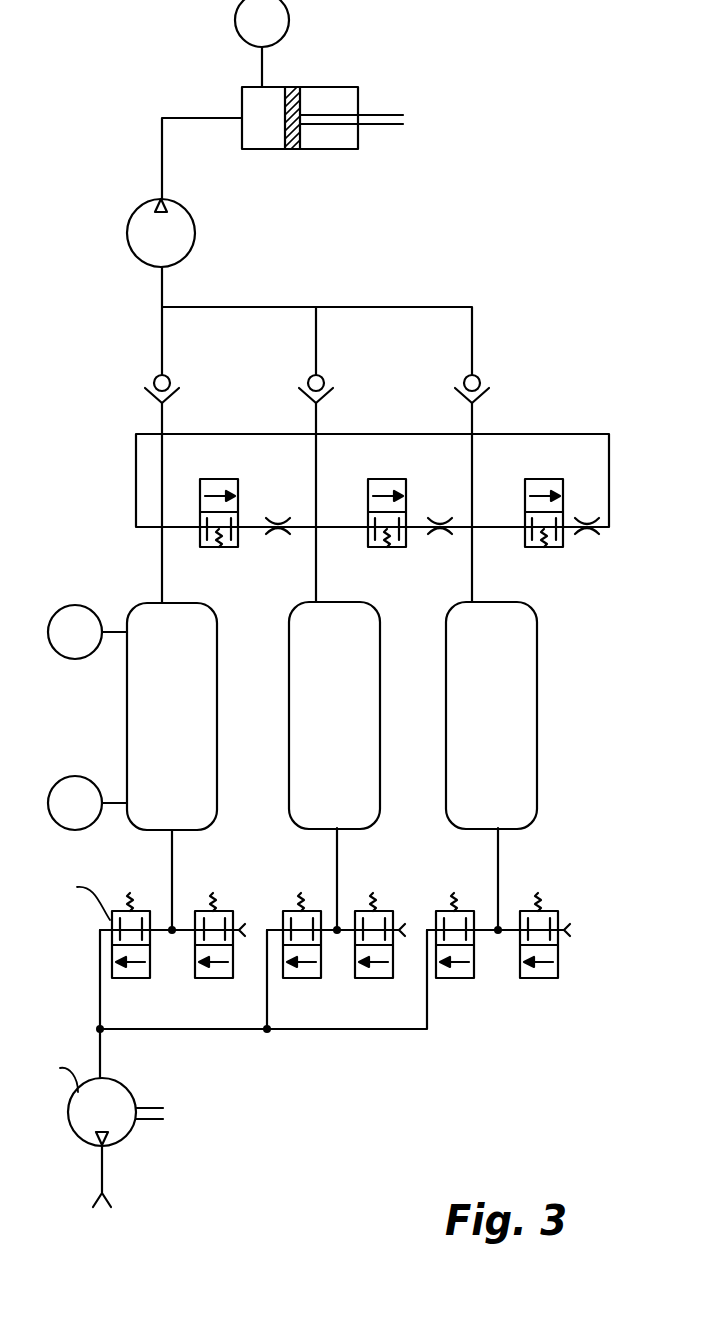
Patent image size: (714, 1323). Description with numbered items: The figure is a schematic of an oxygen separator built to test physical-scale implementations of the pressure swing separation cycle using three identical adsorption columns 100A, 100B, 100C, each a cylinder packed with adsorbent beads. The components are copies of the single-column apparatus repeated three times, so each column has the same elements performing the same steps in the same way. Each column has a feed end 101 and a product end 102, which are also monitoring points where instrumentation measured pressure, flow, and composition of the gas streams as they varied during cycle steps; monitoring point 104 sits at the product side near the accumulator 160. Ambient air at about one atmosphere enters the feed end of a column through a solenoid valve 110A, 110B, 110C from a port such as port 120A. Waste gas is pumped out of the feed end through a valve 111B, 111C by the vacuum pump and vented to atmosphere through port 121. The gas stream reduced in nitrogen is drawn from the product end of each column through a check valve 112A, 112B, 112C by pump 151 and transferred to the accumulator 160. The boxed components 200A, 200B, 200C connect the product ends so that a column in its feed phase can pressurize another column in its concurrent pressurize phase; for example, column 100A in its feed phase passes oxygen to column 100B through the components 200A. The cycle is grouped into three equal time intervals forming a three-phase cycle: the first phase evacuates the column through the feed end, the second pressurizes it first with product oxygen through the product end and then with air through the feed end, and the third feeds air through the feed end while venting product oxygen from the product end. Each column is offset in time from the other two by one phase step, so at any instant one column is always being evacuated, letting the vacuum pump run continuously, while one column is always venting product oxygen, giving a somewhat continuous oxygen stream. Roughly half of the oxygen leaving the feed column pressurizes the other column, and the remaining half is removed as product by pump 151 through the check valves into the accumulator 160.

The monitoring point 104 is at (262, 43).
The accumulator 160 is at (260, 128).
The pump 151 is at (143, 215).
The check valve 112A is at (156, 378).
The check valve 112B is at (310, 378).
The check valve 112C is at (465, 377).
The pressurization components 200A is at (218, 480).
The pressurization components 200B is at (385, 480).
The pressurization components 200C is at (530, 482).
The adsorption column 100A is at (200, 736).
The adsorption column 100B is at (362, 728).
The adsorption column 100C is at (520, 728).
The product end 102 is at (87, 632).
The feed end 101 is at (87, 803).
The solenoid valve 110A is at (203, 910).
The port 120A is at (228, 912).
The valve 111B is at (316, 911).
The solenoid valve 110B is at (393, 912).
The valve 111C is at (466, 911).
The solenoid valve 110C is at (548, 912).
The port 121 is at (115, 1158).